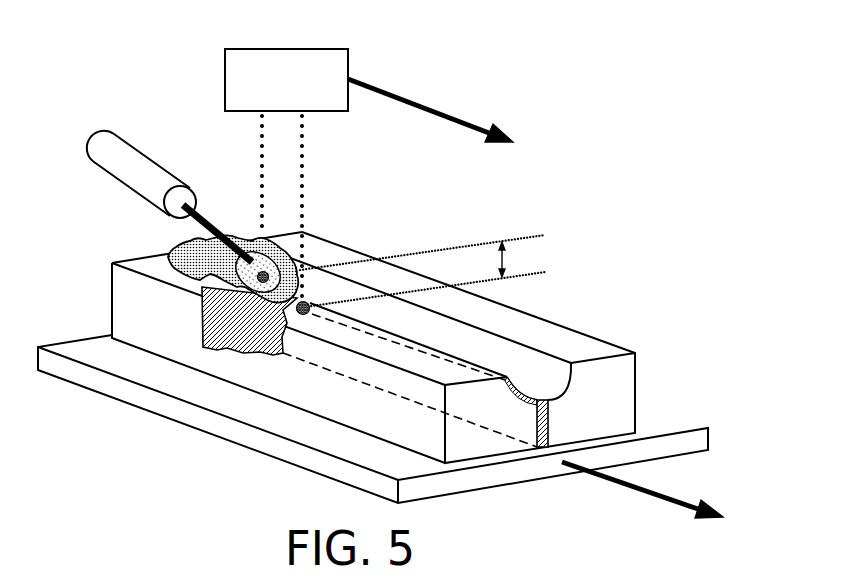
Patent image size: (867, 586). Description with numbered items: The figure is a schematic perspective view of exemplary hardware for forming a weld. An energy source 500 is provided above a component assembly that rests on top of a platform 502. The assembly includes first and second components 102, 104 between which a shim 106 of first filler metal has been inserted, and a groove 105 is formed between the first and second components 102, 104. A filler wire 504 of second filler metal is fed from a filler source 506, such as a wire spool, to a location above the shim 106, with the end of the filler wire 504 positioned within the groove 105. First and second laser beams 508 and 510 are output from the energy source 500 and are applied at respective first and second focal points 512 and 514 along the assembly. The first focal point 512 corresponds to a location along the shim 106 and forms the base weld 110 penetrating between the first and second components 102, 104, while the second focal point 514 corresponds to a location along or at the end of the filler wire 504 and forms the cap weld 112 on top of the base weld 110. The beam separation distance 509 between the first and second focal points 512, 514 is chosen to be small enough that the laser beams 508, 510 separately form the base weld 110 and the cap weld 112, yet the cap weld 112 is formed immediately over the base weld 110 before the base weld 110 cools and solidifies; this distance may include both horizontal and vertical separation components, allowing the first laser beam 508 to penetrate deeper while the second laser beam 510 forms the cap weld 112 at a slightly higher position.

The energy source 500 is at (345, 60).
The platform 502 is at (672, 422).
The filler wire 504 is at (198, 211).
The filler source 506 is at (115, 142).
The first laser beam 508 is at (303, 163).
The second laser beam 510 is at (262, 162).
The first focal point 512 is at (308, 302).
The second focal point 514 is at (278, 253).
The beam separation distance 509 is at (503, 258).
The cap weld 112 is at (202, 248).
The base weld 110 is at (219, 338).
The second component 104 is at (627, 375).
The first component 102 is at (425, 437).
The groove 105 is at (534, 374).
The shim 106 is at (552, 425).